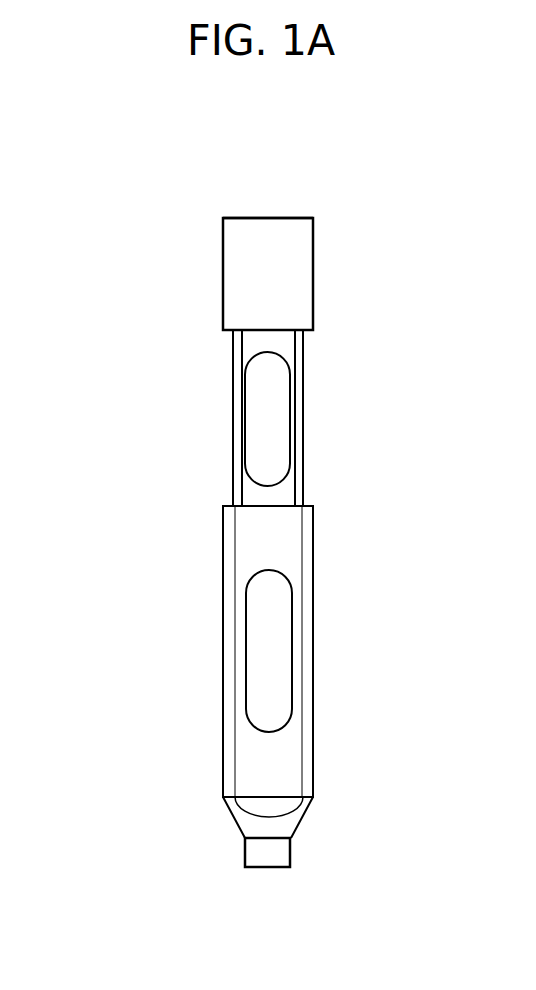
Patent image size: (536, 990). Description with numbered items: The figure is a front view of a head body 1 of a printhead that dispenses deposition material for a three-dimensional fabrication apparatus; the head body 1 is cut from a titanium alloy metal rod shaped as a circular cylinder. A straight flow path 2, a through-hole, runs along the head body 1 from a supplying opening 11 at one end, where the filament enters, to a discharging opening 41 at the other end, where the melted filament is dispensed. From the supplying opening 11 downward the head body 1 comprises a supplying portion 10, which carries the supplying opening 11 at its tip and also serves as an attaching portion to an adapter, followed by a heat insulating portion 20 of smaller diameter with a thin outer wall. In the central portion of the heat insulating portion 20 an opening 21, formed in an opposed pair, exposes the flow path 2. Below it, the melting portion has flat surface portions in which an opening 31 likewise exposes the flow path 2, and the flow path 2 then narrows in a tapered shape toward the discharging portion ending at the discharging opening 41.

The head body 1 is at (317, 168).
The supplying portion 10 is at (248, 272).
The supplying opening 11 is at (251, 218).
The heat insulating portion 20 is at (233, 368).
The flow path 2 is at (199, 542).
The opening 21 is at (265, 445).
The opening 31 is at (268, 647).
The discharging opening 41 is at (267, 868).